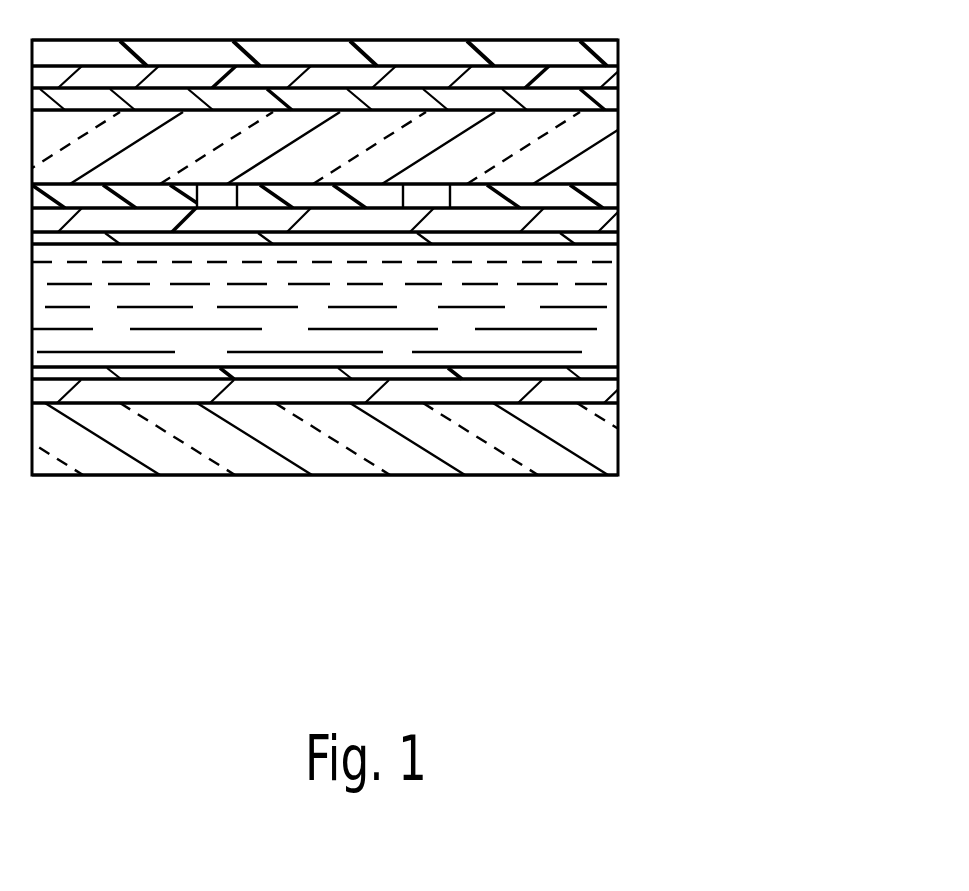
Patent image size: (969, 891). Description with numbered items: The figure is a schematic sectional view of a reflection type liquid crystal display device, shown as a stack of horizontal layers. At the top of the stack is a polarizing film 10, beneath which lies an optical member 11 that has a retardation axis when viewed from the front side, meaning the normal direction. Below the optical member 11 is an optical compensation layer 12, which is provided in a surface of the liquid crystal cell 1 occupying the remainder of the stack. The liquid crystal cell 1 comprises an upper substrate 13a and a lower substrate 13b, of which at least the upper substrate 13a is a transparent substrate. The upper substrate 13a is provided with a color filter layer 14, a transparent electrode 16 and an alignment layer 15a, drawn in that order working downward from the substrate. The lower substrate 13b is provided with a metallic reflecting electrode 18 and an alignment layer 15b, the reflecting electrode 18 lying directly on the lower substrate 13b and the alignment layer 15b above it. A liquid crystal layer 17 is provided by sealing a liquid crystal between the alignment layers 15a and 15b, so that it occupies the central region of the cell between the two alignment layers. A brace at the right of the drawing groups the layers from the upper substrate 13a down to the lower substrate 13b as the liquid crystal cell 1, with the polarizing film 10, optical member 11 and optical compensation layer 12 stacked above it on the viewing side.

The liquid crystal cell 1 is at (827, 125).
The polarizing film 10 is at (612, 52).
The optical member 11 is at (613, 80).
The optical compensation layer 12 is at (613, 102).
The upper substrate 13a is at (613, 152).
The color filter layer 14 is at (610, 197).
The transparent electrode 16 is at (610, 223).
The alignment layer 15a is at (620, 243).
The liquid crystal layer 17 is at (607, 302).
The alignment layer 15b is at (620, 375).
The metallic reflecting electrode 18 is at (612, 395).
The lower substrate 13b is at (607, 443).